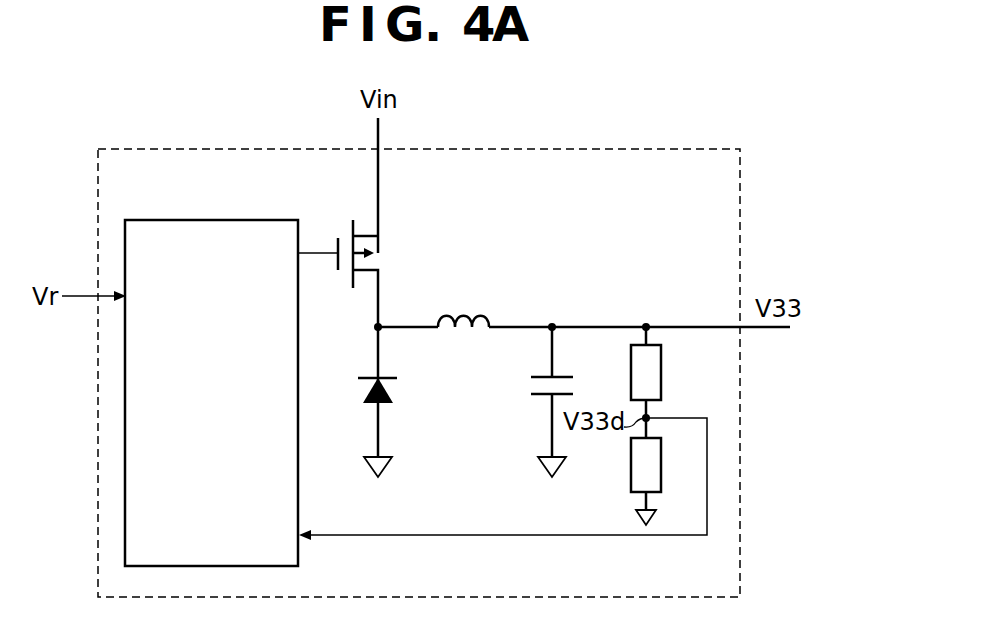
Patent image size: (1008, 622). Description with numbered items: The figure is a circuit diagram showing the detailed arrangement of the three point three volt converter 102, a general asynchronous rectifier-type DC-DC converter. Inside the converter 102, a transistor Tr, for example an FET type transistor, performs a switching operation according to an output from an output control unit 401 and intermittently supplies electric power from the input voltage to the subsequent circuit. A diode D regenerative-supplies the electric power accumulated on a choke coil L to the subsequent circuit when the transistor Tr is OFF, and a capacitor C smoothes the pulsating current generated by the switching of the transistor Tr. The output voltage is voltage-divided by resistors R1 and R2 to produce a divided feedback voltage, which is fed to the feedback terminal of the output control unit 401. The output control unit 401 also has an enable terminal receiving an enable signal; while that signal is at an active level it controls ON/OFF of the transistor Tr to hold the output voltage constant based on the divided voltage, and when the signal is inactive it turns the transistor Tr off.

The 3.3 V converter 102 is at (594, 147).
The output control unit 401 is at (207, 219).
The transistor Tr is at (357, 273).
The choke coil L is at (463, 339).
The diode D is at (391, 402).
The capacitor C is at (539, 402).
The resistor R1 is at (664, 372).
The resistor R2 is at (664, 471).